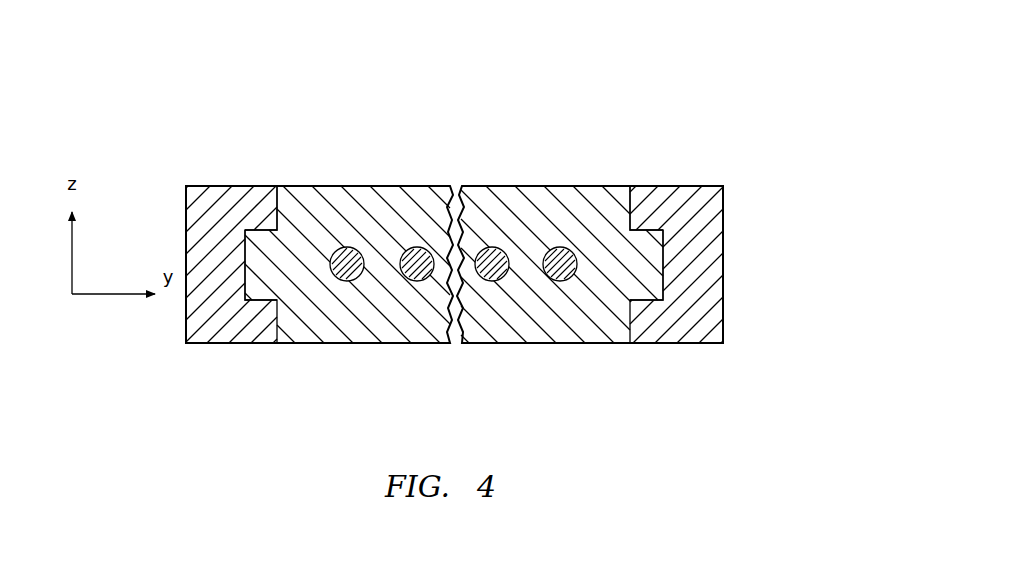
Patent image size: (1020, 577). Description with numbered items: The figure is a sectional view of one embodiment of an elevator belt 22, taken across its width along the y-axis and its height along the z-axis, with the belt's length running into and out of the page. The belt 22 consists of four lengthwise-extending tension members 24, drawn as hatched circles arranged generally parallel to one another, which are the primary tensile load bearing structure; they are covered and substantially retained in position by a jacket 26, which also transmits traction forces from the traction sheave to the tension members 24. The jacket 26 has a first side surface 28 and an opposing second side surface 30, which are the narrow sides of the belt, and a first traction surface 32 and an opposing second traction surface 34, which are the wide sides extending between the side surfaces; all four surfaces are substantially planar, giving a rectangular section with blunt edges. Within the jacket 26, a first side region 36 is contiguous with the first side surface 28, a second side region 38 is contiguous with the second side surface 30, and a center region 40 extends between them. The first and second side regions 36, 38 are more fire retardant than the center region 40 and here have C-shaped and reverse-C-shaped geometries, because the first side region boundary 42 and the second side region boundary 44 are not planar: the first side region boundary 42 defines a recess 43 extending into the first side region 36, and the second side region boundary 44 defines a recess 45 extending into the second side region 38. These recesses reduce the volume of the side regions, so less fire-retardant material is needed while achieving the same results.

The belt 22 is at (693, 92).
The tension members 24 is at (551, 249).
The jacket 26 is at (207, 172).
The first side surface 28 is at (186, 340).
The second side surface 30 is at (723, 327).
The first traction surface 32 is at (310, 345).
The second traction surface 34 is at (327, 184).
The first side region 36 is at (221, 331).
The second side region 38 is at (680, 300).
The center region 40 is at (549, 331).
The first side region boundary 42 is at (281, 212).
The recess 43 is at (264, 261).
The second side region boundary 44 is at (630, 213).
The recess 45 is at (639, 264).